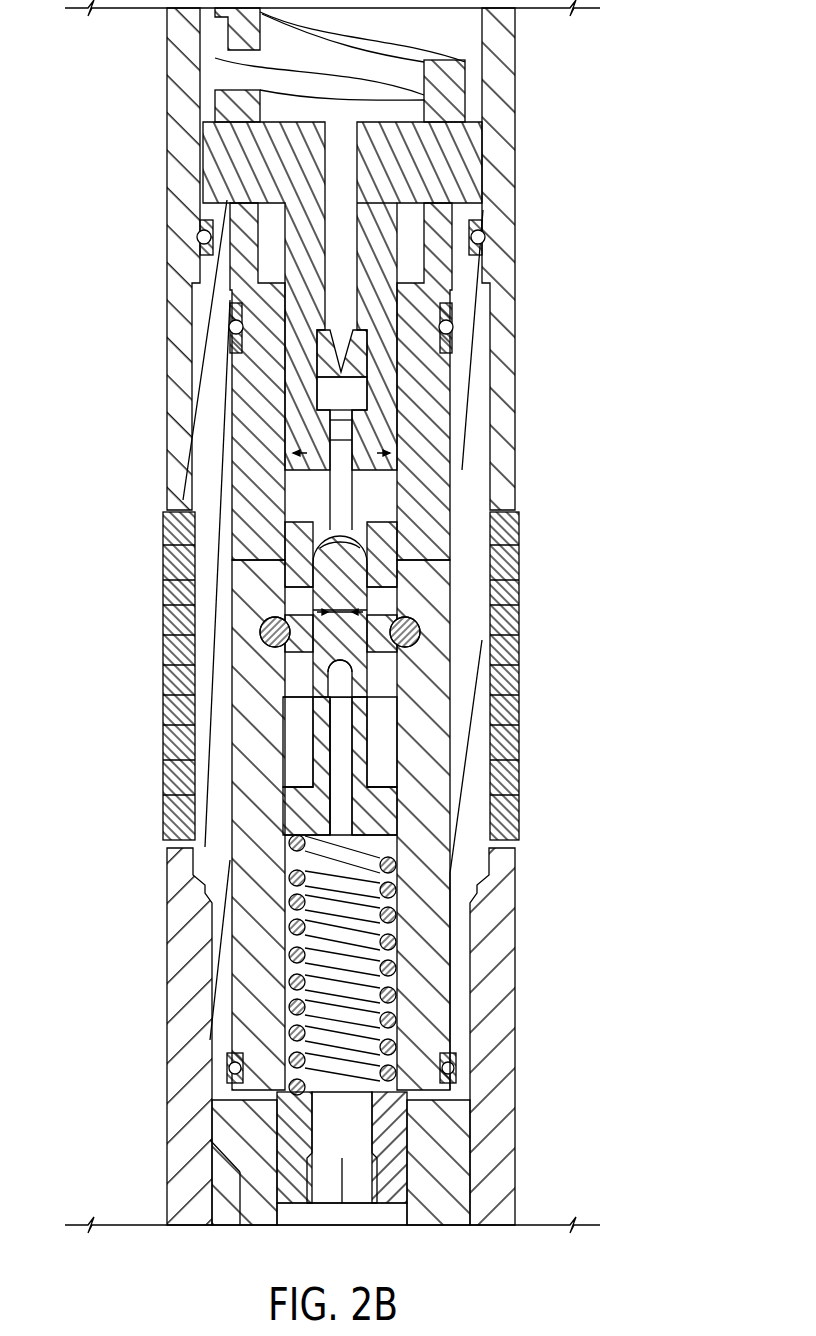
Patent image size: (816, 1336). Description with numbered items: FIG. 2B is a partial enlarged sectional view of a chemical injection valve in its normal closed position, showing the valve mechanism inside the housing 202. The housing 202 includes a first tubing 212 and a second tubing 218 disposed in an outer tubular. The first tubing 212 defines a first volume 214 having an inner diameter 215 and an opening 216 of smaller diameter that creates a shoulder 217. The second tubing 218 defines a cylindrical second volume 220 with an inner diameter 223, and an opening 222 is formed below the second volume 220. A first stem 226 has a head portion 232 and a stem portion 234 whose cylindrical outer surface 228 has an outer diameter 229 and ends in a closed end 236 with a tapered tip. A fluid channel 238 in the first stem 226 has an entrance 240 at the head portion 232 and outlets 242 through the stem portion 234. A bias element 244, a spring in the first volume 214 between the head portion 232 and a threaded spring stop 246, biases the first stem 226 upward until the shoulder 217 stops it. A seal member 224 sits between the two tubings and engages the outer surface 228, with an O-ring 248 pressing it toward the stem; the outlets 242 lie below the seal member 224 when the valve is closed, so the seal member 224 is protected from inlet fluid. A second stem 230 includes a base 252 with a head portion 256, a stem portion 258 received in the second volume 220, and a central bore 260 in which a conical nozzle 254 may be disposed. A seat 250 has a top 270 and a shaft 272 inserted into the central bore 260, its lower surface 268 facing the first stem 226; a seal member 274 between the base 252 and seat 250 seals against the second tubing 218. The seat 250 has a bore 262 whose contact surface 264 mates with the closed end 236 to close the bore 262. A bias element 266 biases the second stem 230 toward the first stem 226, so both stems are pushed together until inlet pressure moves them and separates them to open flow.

The housing 202 is at (185, 948).
The first tubing 212 is at (265, 832).
The first volume 214 is at (380, 752).
The inner diameter 215 is at (350, 930).
The opening 216 is at (335, 640).
The shoulder 217 is at (385, 655).
The second tubing 218 is at (268, 480).
The second volume 220 is at (368, 567).
The opening 222 is at (375, 610).
The inner diameter 223 is at (300, 453).
The seal member 224 is at (333, 607).
The first stem 226 is at (300, 826).
The outer surface 228 is at (260, 583).
The outer diameter 229 is at (350, 683).
The second stem 230 is at (278, 250).
The head portion 232 is at (385, 803).
The stem portion 234 is at (390, 722).
The closed end 236 is at (372, 535).
The fluid channel 238 is at (345, 778).
The entrance 240 is at (455, 878).
The outlets 242 is at (330, 705).
The bias element 244 is at (283, 1013).
The spring stop 246 is at (277, 1140).
The O-ring 248 is at (260, 634).
The seat 250 is at (335, 386).
The base 252 is at (305, 297).
The nozzle 254 is at (322, 355).
The head portion 256 is at (455, 180).
The stem portion 258 is at (378, 232).
The central bore 260 is at (355, 390).
The bore 262 is at (345, 440).
The contact surface 264 is at (288, 525).
The bias element 266 is at (225, 33).
The lower surface 268 is at (315, 567).
The top 270 is at (385, 557).
The shaft 272 is at (360, 422).
The seal member 274 is at (300, 548).